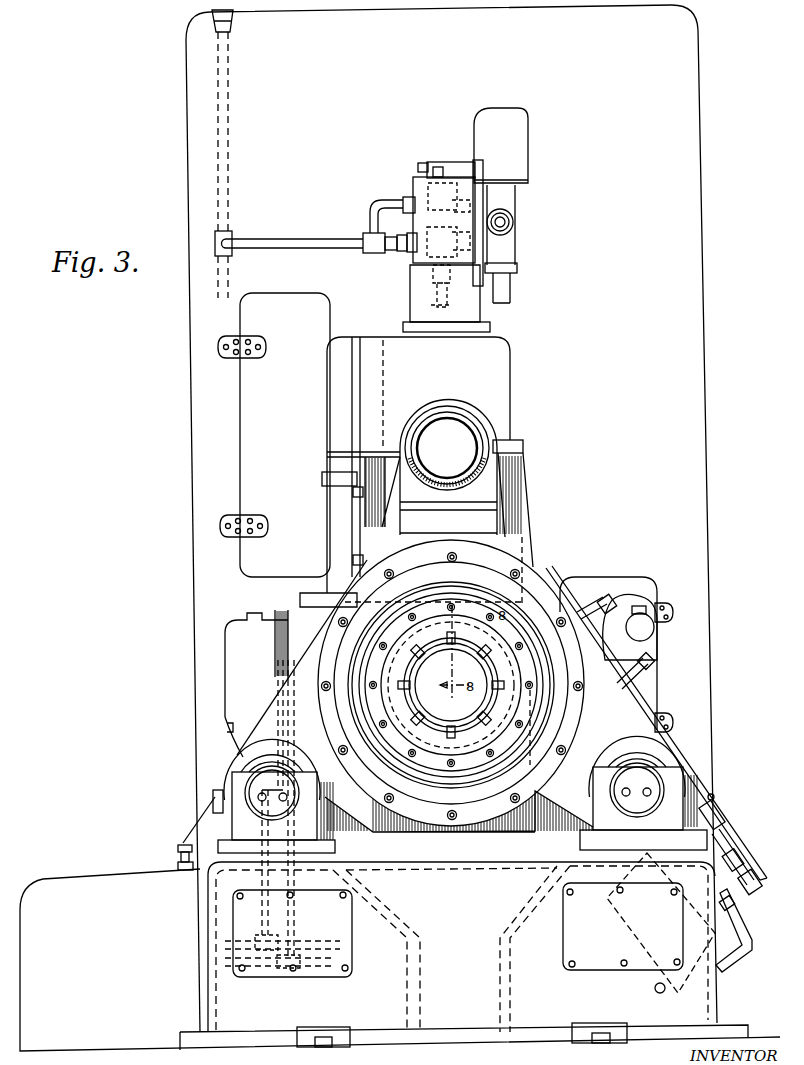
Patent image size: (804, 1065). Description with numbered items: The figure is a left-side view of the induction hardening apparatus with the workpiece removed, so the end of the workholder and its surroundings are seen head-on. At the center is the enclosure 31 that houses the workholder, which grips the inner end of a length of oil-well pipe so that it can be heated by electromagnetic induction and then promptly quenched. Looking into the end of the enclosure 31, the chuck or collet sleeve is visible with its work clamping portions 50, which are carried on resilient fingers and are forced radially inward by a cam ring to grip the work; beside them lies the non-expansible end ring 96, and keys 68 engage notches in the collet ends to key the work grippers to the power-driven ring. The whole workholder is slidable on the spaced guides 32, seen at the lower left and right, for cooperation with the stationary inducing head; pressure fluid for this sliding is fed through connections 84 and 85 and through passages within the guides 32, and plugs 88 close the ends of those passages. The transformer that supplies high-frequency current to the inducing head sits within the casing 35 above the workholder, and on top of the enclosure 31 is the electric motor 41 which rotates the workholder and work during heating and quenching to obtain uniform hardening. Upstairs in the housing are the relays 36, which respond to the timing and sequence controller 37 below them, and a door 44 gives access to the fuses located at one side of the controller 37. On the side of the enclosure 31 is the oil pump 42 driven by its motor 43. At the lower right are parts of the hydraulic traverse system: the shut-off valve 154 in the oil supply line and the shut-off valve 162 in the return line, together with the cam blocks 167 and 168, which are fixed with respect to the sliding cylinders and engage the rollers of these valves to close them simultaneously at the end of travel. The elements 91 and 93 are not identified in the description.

The relays 36 is at (338, 111).
The timing and sequence controller 37 is at (582, 312).
The door 44 is at (291, 426).
The electric motor 41 is at (459, 456).
The casing 35 is at (430, 551).
The enclosure 31 is at (293, 658).
The guides 32 is at (243, 783).
The plugs 88 is at (282, 793).
The pipes 85 is at (597, 823).
The pipes 84 is at (452, 814).
The keys 68 is at (408, 677).
The non-expansible end ring 96 is at (458, 644).
The work clamping portions 50 is at (420, 708).
The pipe 91 is at (596, 607).
The oil pump 42 is at (647, 627).
The motor 43 is at (624, 648).
The pipe 93 is at (645, 674).
The shut-off valve 162 is at (728, 864).
The cam block 168 is at (745, 861).
The cam block 167 is at (756, 884).
The shut-off valve 154 is at (740, 907).